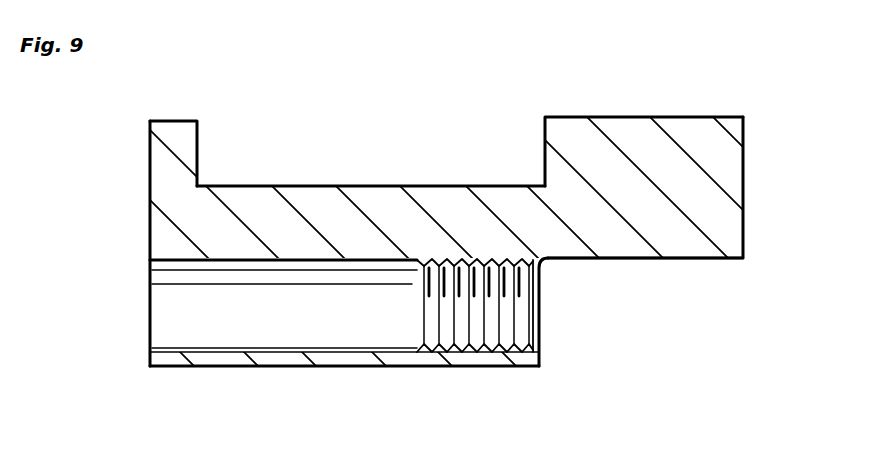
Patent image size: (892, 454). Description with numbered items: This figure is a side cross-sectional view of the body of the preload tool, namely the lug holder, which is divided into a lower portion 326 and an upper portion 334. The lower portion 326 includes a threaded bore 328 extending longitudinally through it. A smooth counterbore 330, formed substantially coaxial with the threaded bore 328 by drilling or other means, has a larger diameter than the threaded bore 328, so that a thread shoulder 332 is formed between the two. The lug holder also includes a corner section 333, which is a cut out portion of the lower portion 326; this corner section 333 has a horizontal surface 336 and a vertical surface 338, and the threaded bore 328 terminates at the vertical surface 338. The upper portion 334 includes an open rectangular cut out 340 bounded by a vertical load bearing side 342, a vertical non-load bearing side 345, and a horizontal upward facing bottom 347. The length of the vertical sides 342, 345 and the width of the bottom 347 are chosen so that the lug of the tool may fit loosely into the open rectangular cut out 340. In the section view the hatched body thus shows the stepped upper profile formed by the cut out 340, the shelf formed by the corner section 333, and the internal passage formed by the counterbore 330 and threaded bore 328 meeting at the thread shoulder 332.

The lower portion 326 is at (545, 363).
The threaded bore 328 is at (483, 332).
The smooth counterbore 330 is at (186, 352).
The thread shoulder 332 is at (413, 345).
The corner section 333 is at (708, 254).
The upper portion 334 is at (148, 223).
The horizontal surface 336 is at (635, 259).
The vertical surface 338 is at (535, 350).
The open rectangular cut out 340 is at (273, 136).
The vertical load bearing side 342 is at (545, 137).
The vertical non-load bearing side 345 is at (199, 147).
The horizontal upward facing bottom 347 is at (328, 186).